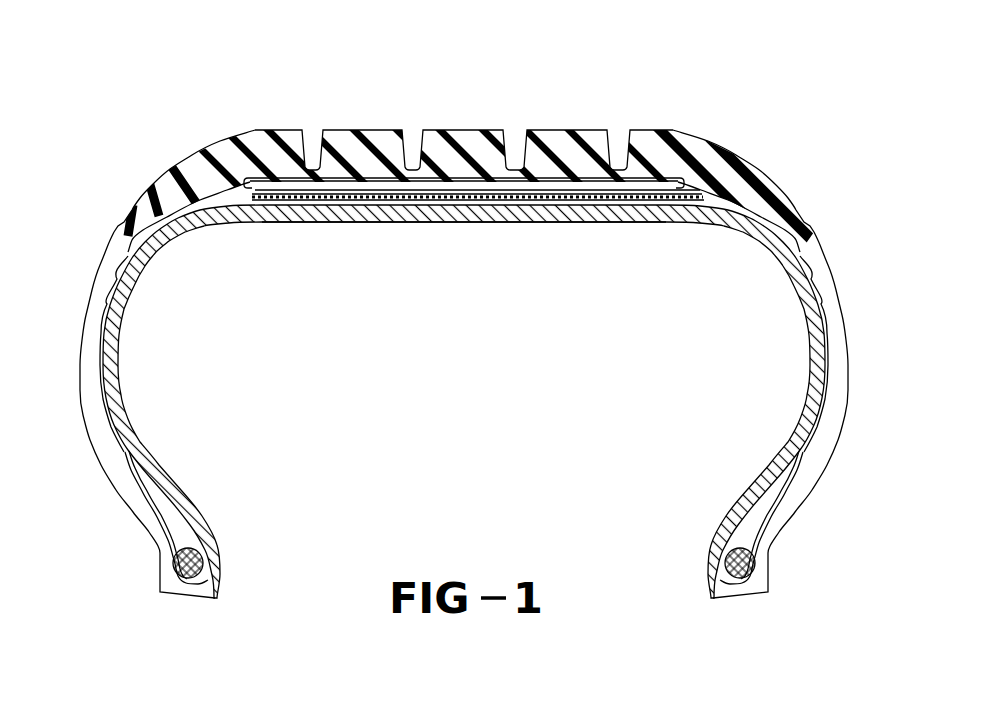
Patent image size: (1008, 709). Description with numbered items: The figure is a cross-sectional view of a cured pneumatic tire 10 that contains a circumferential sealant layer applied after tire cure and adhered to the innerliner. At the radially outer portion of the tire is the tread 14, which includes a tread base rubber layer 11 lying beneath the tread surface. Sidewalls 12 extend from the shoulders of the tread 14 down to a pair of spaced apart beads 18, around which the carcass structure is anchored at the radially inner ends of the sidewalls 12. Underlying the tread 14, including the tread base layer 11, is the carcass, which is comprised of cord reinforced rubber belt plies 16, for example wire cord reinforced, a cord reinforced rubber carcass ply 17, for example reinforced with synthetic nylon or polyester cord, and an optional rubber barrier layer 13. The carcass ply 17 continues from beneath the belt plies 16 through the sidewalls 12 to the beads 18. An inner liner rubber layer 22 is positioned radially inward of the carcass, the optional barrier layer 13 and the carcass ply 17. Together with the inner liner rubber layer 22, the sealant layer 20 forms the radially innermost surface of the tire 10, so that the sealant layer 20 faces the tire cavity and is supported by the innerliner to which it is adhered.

The pneumatic tire 10 is at (464, 310).
The tread base rubber layer 11 is at (413, 176).
The sidewalls 12 is at (78, 358).
The rubber barrier layer 13 is at (533, 196).
The tread 14 is at (465, 129).
The rubber belt plies 16 is at (605, 187).
The rubber carcass ply 17 is at (330, 190).
The beads 18 is at (188, 565).
The sealant layer 20 is at (595, 210).
The inner liner rubber layer 22 is at (399, 196).